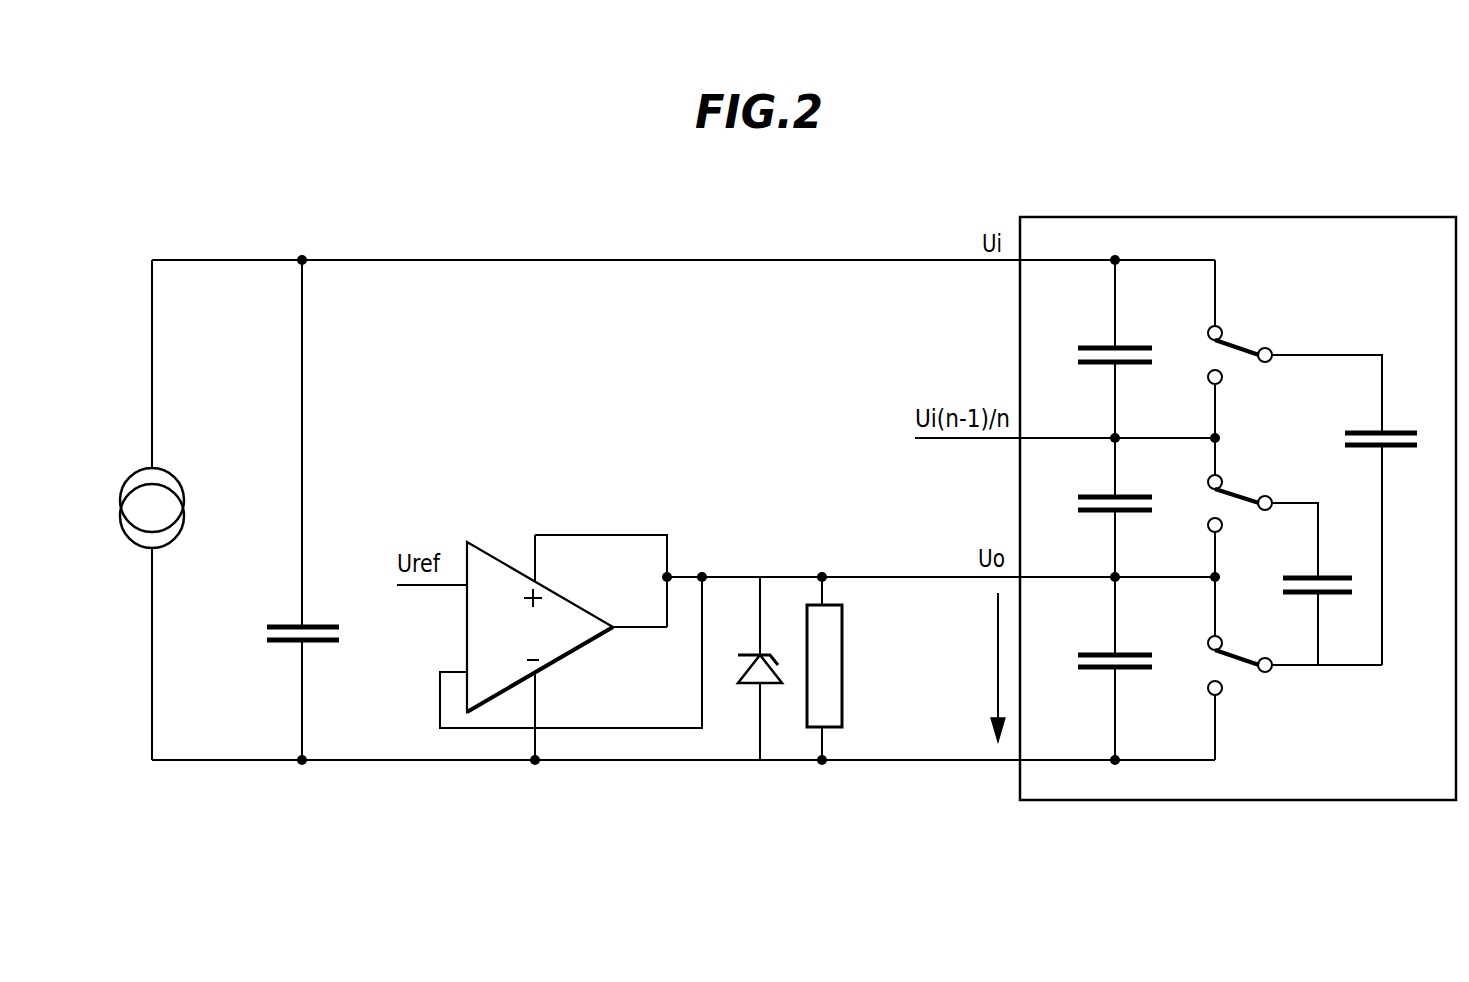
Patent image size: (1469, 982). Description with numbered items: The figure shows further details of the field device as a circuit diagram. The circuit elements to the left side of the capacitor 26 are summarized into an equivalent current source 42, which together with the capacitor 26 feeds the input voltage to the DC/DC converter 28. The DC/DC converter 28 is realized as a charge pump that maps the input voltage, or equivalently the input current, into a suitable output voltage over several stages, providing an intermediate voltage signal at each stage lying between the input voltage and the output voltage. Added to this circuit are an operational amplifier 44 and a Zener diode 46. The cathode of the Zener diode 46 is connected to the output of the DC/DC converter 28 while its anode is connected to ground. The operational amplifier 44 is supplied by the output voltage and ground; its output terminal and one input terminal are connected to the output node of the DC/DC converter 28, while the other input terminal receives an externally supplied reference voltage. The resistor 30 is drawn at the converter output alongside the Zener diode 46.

The equivalent current source 42 is at (181, 478).
The capacitor 26 is at (281, 627).
The operational amplifier 44 is at (480, 546).
The Zener diode 46 is at (743, 655).
The resistor 30 is at (843, 637).
The DC/DC converter 28 is at (1420, 217).